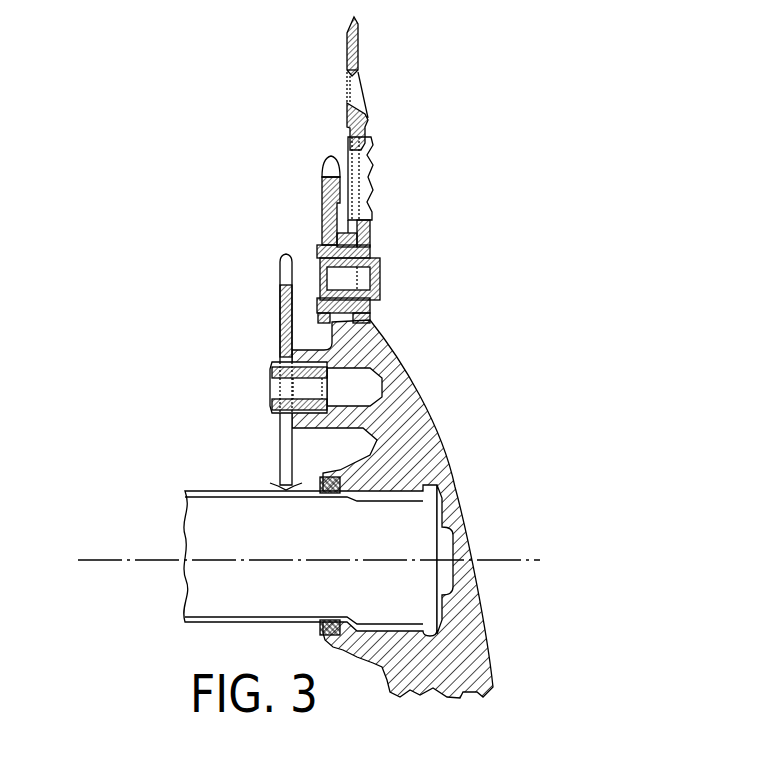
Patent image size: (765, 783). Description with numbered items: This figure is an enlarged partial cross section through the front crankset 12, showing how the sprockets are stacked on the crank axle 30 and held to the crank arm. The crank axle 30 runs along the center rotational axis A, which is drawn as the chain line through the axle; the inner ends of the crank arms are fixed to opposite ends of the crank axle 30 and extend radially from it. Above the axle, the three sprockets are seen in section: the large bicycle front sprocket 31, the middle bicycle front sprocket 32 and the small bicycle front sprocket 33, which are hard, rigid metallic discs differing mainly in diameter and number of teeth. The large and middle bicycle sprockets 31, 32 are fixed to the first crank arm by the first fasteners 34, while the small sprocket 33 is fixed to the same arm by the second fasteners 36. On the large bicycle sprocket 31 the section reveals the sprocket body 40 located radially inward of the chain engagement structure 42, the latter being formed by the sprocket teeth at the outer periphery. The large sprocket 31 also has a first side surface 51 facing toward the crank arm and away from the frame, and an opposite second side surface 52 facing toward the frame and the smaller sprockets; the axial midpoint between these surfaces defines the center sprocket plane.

The front crankset 12 is at (542, 190).
The crank axle 30 is at (205, 491).
The large bicycle front sprocket 31 is at (380, 163).
The middle bicycle front sprocket 32 is at (314, 201).
The small bicycle front sprocket 33 is at (273, 323).
The first fasteners 34 is at (381, 255).
The second fasteners 36 is at (272, 367).
The sprocket body 40 is at (368, 133).
The chain engagement structure 42 is at (358, 50).
The first side surface 51 is at (358, 72).
The second side surface 52 is at (347, 71).
The center rotational axis A is at (107, 558).